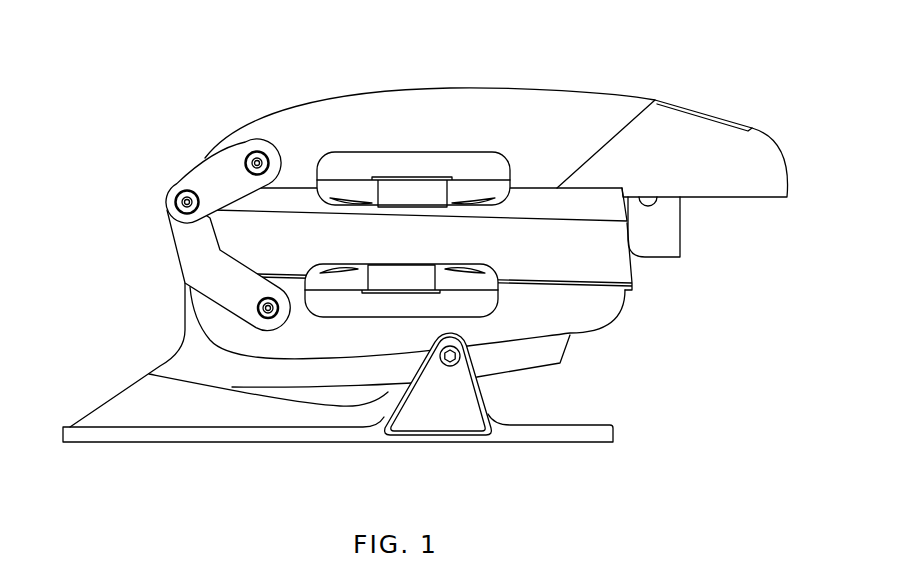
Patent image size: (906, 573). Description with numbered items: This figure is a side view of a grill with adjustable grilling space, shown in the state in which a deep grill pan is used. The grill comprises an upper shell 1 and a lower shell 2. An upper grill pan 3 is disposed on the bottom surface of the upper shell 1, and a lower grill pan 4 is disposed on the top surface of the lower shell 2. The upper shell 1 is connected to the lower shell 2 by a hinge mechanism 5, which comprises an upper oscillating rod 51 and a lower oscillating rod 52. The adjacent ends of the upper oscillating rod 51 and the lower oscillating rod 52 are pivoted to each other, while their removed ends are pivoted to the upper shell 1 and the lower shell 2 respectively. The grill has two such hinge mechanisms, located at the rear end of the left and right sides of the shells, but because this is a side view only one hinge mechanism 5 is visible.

The upper shell 1 is at (447, 108).
The lower shell 2 is at (570, 322).
The upper grill pan 3 is at (583, 200).
The lower grill pan 4 is at (612, 260).
The hinge mechanism 5 is at (158, 203).
The upper oscillating rod 51 is at (222, 167).
The lower oscillating rod 52 is at (187, 257).